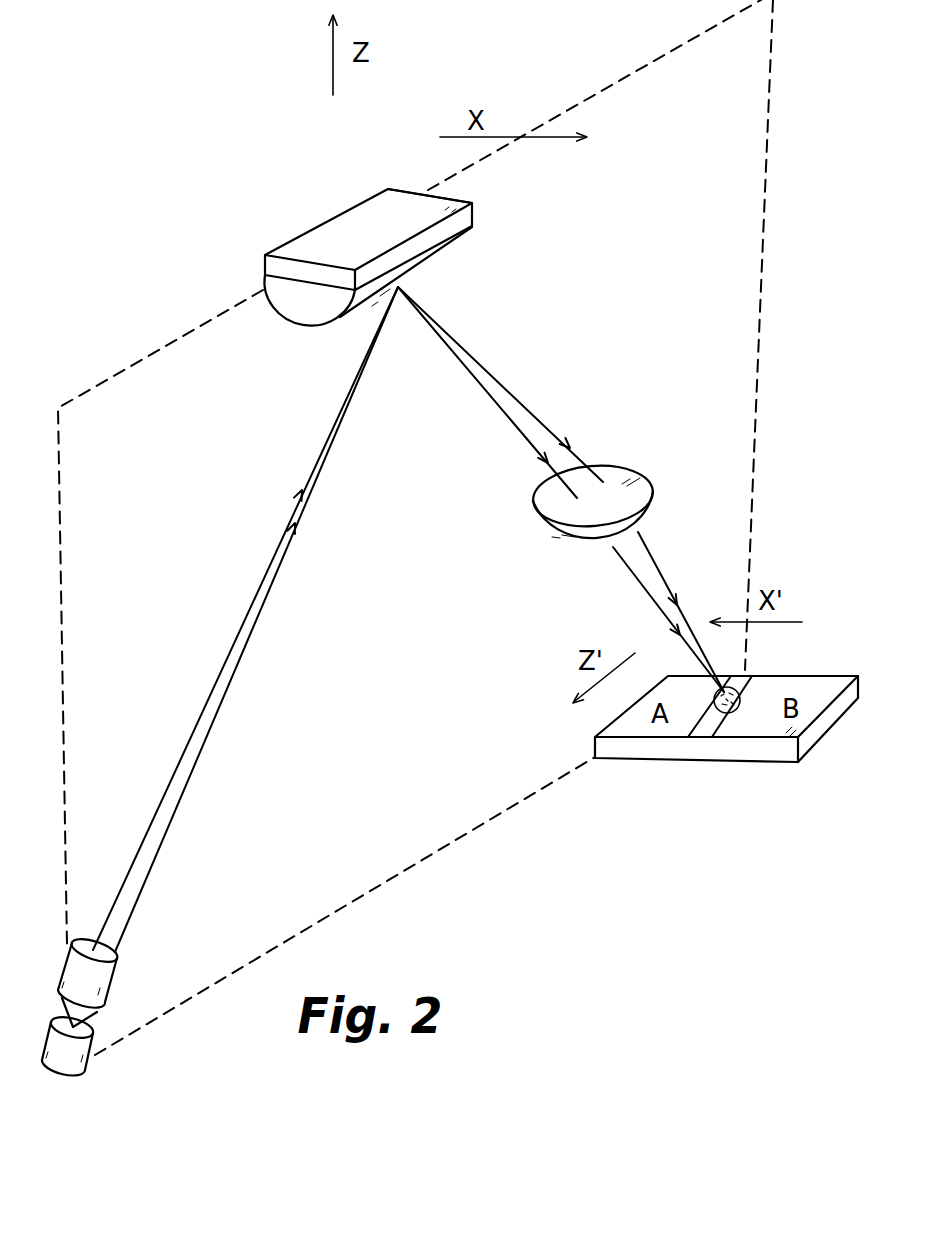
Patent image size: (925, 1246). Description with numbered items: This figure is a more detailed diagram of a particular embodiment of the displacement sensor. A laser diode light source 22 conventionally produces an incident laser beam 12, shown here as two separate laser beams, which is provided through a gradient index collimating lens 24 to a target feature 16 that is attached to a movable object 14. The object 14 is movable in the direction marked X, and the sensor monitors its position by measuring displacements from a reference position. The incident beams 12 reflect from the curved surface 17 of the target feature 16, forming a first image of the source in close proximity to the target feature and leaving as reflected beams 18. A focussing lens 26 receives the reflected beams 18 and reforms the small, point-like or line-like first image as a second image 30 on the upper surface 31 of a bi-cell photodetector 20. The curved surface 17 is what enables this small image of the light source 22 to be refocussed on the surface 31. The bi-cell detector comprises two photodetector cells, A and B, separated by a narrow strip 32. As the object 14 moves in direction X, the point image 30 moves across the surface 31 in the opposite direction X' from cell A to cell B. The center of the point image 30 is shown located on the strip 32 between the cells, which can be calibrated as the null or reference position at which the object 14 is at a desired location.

The incident laser beam 12 is at (193, 745).
The movable object 14 is at (350, 216).
The target feature 16 is at (460, 247).
The curved surface 17 is at (340, 318).
The reflected beam 18 is at (514, 399).
The photodetector 20 is at (712, 750).
The laser diode light source 22 is at (88, 1062).
The GRIN collimating lens 24 is at (112, 977).
The focussing lens 26 is at (640, 477).
The second image 30 is at (746, 685).
The upper surface 31 is at (765, 725).
The narrow strip 32 is at (700, 731).